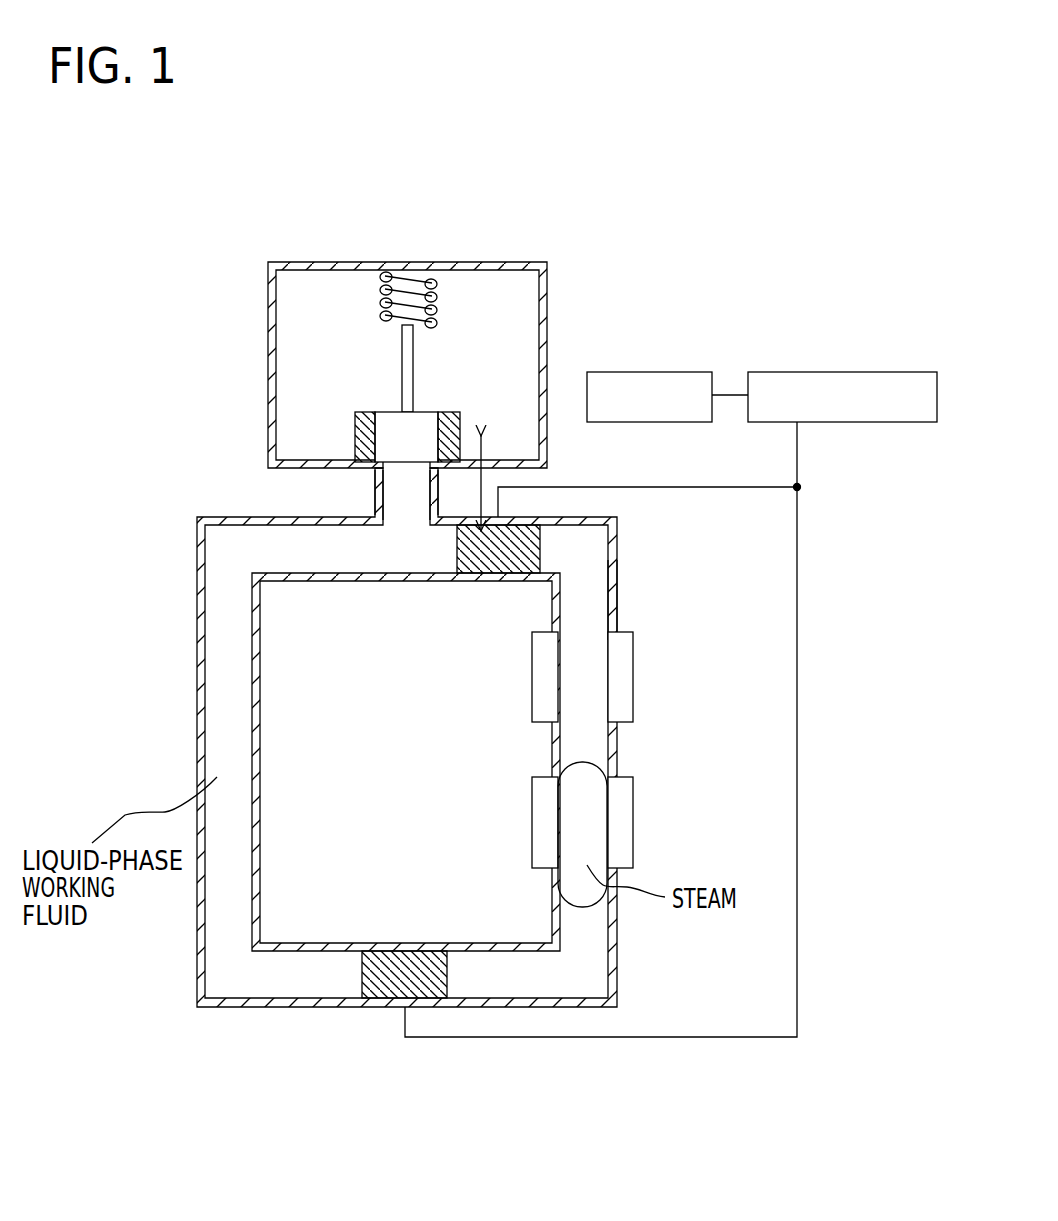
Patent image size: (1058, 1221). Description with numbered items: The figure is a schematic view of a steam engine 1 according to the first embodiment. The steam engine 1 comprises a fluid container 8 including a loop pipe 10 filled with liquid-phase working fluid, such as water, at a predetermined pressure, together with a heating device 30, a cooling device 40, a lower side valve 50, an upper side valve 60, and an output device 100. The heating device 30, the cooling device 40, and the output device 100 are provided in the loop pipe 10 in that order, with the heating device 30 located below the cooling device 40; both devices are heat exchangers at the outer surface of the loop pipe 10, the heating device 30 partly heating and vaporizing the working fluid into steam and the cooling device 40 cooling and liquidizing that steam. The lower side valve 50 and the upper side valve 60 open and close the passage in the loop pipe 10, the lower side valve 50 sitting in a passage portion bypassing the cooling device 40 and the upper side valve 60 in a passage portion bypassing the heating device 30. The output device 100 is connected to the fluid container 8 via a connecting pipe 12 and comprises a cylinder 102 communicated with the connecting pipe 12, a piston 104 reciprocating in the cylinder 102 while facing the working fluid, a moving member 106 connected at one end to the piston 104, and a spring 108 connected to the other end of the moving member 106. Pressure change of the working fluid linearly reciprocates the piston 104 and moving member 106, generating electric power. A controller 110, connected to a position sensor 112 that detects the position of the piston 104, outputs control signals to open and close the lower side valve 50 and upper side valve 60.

The steam engine 1 is at (585, 327).
The fluid container 8 is at (627, 548).
The loop pipe 10 is at (618, 590).
The connecting pipe 12 is at (375, 493).
The heating device 30 is at (618, 817).
The cooling device 40 is at (618, 675).
The lower side valve 50 is at (393, 990).
The upper side valve 60 is at (537, 519).
The output device 100 is at (375, 347).
The cylinder 102 is at (360, 432).
The piston 104 is at (388, 410).
The moving member 106 is at (400, 334).
The spring 108 is at (395, 284).
The controller 110 is at (845, 371).
The position sensor 112 is at (657, 371).